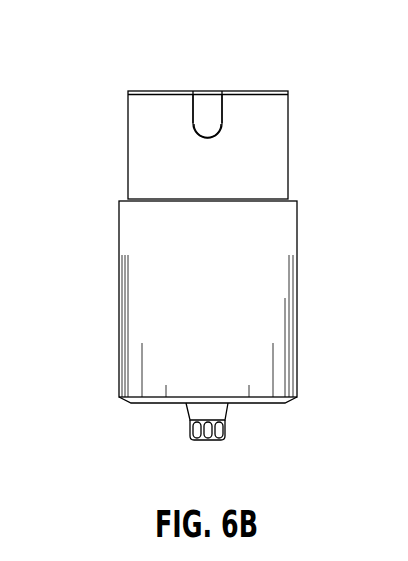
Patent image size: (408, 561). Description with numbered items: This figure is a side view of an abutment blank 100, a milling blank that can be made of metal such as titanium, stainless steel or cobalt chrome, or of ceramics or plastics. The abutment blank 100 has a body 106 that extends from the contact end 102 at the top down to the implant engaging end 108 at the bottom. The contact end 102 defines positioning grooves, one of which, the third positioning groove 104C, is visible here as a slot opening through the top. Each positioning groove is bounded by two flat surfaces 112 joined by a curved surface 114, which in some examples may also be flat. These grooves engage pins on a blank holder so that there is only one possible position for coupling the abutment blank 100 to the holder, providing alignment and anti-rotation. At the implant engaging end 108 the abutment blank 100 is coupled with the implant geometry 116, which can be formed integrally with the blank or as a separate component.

The abutment blank 100 is at (136, 39).
The contact end 102 is at (155, 91).
The third positioning groove 104C is at (207, 102).
The flat surfaces 112 is at (193, 108).
The curved surface 114 is at (207, 138).
The body 106 is at (132, 300).
The implant engaging end 108 is at (268, 405).
The implant geometry 116 is at (192, 432).